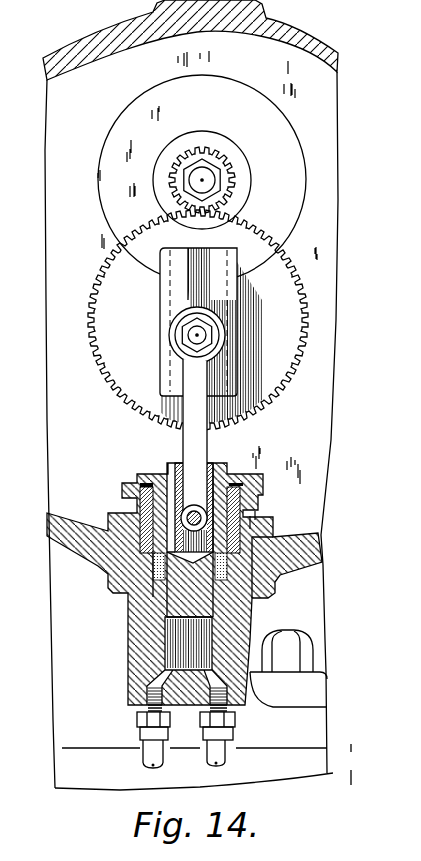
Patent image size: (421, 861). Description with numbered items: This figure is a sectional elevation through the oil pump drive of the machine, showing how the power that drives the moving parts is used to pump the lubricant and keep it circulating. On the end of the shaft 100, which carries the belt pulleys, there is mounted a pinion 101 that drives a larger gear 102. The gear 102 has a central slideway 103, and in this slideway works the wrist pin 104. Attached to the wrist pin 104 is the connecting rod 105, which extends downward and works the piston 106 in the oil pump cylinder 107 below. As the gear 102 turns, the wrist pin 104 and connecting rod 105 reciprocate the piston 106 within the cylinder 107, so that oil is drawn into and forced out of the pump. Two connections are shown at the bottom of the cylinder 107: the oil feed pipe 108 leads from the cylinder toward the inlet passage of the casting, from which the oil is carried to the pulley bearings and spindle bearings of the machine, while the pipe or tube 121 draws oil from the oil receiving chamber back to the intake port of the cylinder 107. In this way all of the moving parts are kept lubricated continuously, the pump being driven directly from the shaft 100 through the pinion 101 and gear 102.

The shaft 100 is at (205, 180).
The pinion 101 is at (215, 158).
The gear 102 is at (244, 282).
The central slideway 103 is at (190, 267).
The wrist pin 104 is at (193, 335).
The connecting rod 105 is at (195, 428).
The piston 106 is at (178, 588).
The oil pump cylinder 107 is at (140, 635).
The oil feed pipe 108 is at (150, 752).
The pipe or tube 121 is at (222, 752).